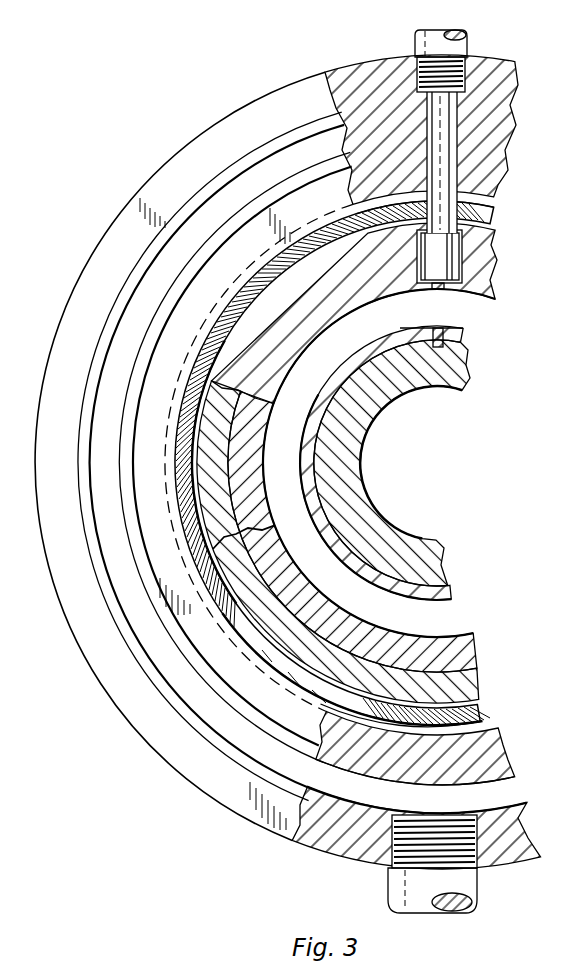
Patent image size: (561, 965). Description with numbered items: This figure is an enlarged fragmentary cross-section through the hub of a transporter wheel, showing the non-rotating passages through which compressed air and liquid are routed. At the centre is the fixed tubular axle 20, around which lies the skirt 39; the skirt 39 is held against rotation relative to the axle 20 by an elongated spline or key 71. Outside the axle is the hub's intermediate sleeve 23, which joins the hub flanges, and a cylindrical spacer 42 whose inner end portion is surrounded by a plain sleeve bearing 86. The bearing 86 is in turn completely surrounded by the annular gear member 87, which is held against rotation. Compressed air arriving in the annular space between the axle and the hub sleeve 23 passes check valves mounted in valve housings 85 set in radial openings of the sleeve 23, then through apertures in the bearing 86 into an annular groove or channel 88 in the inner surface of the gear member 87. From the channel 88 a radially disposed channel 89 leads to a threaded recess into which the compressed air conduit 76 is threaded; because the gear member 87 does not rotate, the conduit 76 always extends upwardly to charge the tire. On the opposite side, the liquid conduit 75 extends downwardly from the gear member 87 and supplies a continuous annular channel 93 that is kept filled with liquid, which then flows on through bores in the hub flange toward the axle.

The fixed tubular axle 20 is at (425, 537).
The intermediate sleeve 23 is at (474, 645).
The skirt 39 is at (452, 597).
The cylindrical spacer 42 is at (480, 690).
The spline or key 71 is at (441, 328).
The liquid conduit 75 is at (478, 890).
The compressed air conduit 76 is at (446, 30).
The valve housing 85 is at (490, 276).
The sleeve bearing 86 is at (492, 201).
The annular gear member 87 is at (376, 58).
The annular groove or channel 88 is at (492, 227).
The radially disposed channel 89 is at (447, 172).
The continuous annular channel 93 is at (500, 797).